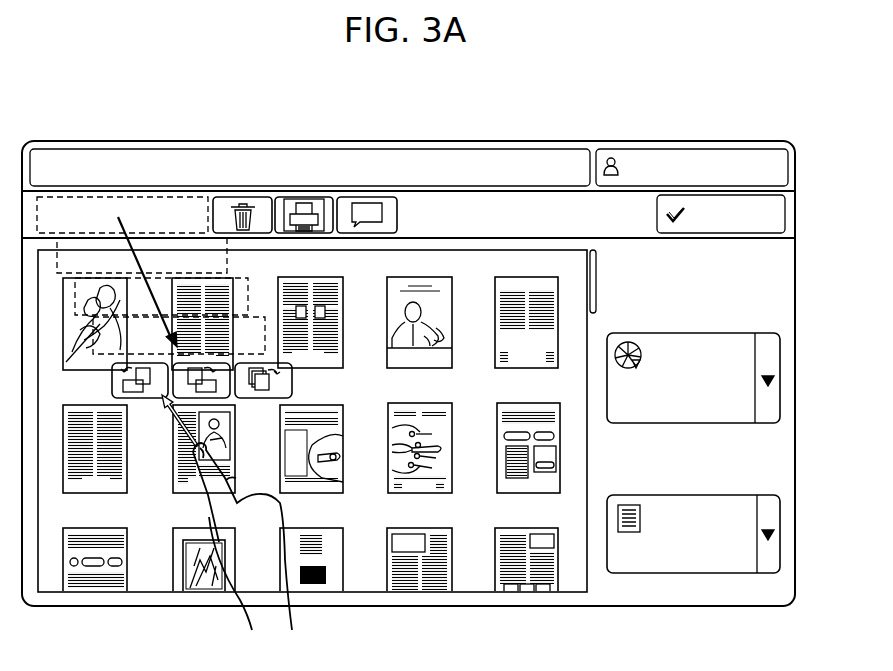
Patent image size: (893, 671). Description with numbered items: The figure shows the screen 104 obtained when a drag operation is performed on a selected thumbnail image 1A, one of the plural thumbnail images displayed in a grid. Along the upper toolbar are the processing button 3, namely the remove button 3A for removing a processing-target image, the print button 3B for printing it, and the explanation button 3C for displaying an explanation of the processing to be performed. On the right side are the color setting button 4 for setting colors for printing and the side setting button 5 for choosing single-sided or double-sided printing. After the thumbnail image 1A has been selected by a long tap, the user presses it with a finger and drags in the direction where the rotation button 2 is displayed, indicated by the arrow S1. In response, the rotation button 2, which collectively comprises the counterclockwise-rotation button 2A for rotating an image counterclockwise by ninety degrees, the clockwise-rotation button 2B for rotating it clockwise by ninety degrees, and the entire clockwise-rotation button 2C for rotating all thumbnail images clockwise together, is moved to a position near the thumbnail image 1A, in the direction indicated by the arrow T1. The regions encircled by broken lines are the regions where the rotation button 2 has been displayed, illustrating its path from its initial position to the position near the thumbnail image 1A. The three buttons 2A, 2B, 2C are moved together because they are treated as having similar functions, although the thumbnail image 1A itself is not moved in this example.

The operation screen (preview screen) 104 is at (533, 122).
The thumbnail image 1A is at (237, 292).
The rotation button 2 is at (202, 115).
The counterclockwise-rotation button 2A is at (130, 362).
The clockwise-rotation button 2B is at (222, 364).
The entire clockwise-rotation button 2C is at (258, 364).
The processing button 3 is at (408, 80).
The remove button 3A is at (263, 203).
The print button 3B is at (325, 204).
The explanation button 3C is at (385, 206).
The color setting button 4 is at (745, 366).
The side setting button 5 is at (747, 545).
The arrow indicating movement direction of rotation button T1 is at (170, 285).
The arrow indicating drag direction S1 is at (170, 421).